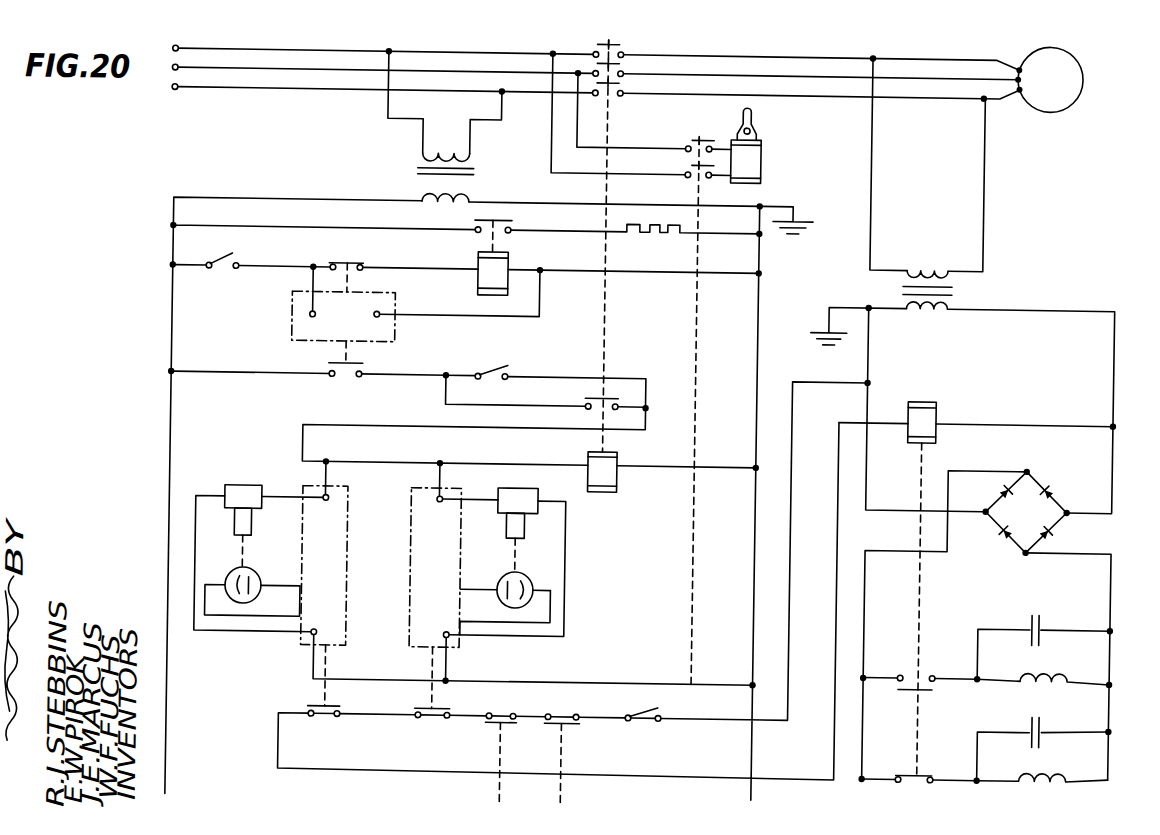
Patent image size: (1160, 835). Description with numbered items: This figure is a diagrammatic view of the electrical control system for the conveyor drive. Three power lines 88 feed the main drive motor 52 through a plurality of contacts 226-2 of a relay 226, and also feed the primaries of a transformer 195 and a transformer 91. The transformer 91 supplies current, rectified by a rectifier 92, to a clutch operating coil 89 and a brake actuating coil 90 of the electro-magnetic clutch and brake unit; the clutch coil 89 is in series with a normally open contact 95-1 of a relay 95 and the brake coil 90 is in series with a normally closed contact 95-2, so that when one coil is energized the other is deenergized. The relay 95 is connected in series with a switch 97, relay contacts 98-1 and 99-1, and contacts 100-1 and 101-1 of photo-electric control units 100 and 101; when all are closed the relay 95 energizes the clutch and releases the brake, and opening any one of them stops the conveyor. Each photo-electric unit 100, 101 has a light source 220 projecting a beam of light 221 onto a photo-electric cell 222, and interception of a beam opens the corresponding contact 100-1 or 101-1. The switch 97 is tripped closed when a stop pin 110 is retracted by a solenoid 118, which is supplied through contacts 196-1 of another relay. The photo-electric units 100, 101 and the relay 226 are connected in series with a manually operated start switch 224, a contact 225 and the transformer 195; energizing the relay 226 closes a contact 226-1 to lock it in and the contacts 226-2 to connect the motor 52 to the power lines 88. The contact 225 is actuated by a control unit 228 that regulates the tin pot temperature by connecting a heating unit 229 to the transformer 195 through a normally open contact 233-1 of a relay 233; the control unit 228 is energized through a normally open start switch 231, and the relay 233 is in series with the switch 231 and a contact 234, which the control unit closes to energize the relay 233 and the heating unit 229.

The power lines 88 is at (447, 94).
The contacts of relay 226 226-2 is at (614, 47).
The motor 52 is at (1038, 94).
The transformer 195 is at (470, 176).
The stop pin 110 is at (748, 116).
The solenoid 118 is at (749, 170).
The contacts of relay 196 196-1 is at (690, 131).
The normally open contact of relay 233 233-1 is at (488, 221).
The heating unit 229 is at (677, 229).
The start switch 231 is at (230, 258).
The contact 234 is at (353, 266).
The relay 233 is at (492, 288).
The control unit 228 is at (396, 335).
The contact 225 is at (361, 369).
The start switch 224 is at (507, 367).
The contact of relay 226 226-1 is at (609, 398).
The relay 226 is at (609, 486).
The light source 220 is at (244, 506).
The beam of light 221 is at (250, 561).
The photo-electric cell 222 is at (243, 609).
The photo-electric control unit 101 is at (347, 557).
The photo-electric control unit 100 is at (411, 549).
The contact of photo-electric control unit 101 101-1 is at (333, 721).
The contact of photo-electric control unit 100 100-1 is at (440, 722).
The contact of relay 99 99-1 is at (511, 704).
The contact of relay 98 98-1 is at (571, 704).
The switch 97 is at (648, 708).
The relay 95 is at (936, 410).
The transformer 91 is at (950, 295).
The rectifier 92 is at (1051, 485).
The normally open contact of relay 95 95-1 is at (924, 684).
The normally closed contact of relay 95 95-2 is at (924, 770).
The clutch operating coil 89 is at (1079, 658).
The brake actuating coil 90 is at (1090, 750).